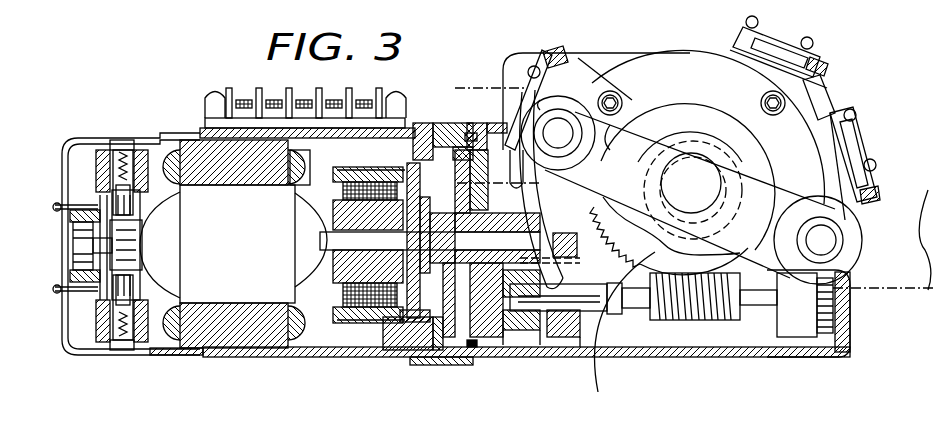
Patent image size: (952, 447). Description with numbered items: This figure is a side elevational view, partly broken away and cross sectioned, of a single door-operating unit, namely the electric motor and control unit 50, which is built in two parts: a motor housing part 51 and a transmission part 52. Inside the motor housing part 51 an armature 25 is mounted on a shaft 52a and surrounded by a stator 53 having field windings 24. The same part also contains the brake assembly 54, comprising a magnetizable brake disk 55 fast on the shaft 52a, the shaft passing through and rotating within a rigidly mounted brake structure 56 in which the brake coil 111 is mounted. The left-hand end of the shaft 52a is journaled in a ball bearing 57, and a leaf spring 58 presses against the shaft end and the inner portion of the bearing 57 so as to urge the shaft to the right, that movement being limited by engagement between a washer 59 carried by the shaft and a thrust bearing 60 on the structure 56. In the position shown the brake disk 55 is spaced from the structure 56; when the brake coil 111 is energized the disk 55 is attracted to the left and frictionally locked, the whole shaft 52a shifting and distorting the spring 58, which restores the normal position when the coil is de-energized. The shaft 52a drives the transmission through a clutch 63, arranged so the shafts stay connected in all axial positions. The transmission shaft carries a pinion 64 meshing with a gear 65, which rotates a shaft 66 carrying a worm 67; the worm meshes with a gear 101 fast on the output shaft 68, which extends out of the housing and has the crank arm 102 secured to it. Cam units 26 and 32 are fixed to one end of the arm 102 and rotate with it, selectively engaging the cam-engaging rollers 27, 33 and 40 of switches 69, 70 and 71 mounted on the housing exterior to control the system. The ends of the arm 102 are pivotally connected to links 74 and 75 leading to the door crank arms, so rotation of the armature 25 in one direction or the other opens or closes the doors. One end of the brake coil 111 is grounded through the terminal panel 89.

The field windings 24 is at (303, 163).
The armature 25 is at (147, 353).
The cam unit 26 is at (556, 48).
The cam-engaging roller 27 is at (546, 62).
The cam unit 32 is at (576, 110).
The cam-engaging roller 33 is at (746, 28).
The cam-engaging roller 40 is at (838, 110).
The electric motor and control unit 50 is at (444, 120).
The motor housing part 51 is at (127, 133).
The unit part 52 is at (689, 52).
The shaft 52a is at (368, 241).
The stator 53 is at (200, 157).
The brake assembly 54 is at (384, 163).
The brake disk 55 is at (405, 325).
The brake structure 56 is at (345, 192).
The ball bearing 57 is at (77, 235).
The leaf spring 58 is at (67, 248).
The washer 59 is at (325, 247).
The thrust bearing 60 is at (342, 293).
The clutch 63 is at (430, 270).
The pinion 64 is at (606, 208).
The gear 65 is at (563, 340).
The shaft 66 is at (643, 320).
The worm 67 is at (692, 320).
The shaft 68 is at (710, 202).
The switch 69 is at (545, 60).
The switch 70 is at (773, 35).
The switch 71 is at (853, 147).
The link 74 is at (485, 102).
The link 75 is at (908, 277).
The terminal panel 89 is at (330, 105).
The gear 101 is at (620, 363).
The crank arm 102 is at (615, 145).
The brake coil 111 is at (358, 180).